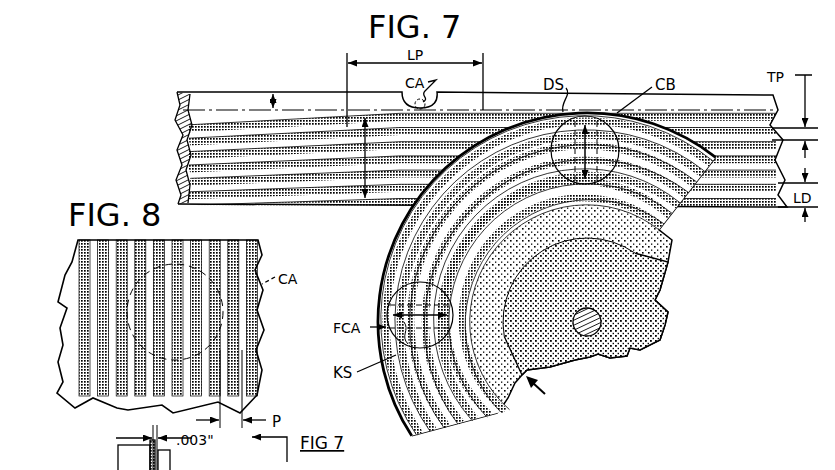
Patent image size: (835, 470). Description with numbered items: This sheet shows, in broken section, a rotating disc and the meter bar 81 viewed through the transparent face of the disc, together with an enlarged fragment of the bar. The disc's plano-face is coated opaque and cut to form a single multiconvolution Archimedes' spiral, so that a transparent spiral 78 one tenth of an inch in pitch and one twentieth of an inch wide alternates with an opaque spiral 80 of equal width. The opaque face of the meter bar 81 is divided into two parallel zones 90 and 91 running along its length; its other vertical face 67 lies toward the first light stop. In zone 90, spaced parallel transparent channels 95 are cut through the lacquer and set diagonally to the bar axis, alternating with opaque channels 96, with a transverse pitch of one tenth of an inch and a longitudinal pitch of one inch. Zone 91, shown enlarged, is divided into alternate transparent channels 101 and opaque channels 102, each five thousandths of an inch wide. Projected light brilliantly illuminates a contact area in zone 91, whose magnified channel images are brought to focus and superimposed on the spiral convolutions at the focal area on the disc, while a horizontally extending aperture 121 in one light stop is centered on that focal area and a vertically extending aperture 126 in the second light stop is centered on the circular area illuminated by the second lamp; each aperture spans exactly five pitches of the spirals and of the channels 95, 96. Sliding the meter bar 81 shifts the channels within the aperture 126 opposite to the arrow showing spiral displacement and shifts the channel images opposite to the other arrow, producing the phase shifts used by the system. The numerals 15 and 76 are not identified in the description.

In FIG. 7, the meter bar 81 is at (178, 100).
In FIG. 7, the opaque channels 96 is at (181, 126).
In FIG. 7, the transparent channels 95 is at (181, 150).
In FIG. 7, the zone 90 is at (374, 200).
In FIG. 7, the zone 91 is at (268, 101).
In FIG. 7, the aperture 126 is at (614, 110).
In FIG. 7, the opaque spiral 80 is at (676, 211).
In FIG. 7, the transparent spiral 78 is at (669, 231).
In FIG. 7, the aperture 121 is at (392, 300).
In FIG. 7, the core 15 is at (661, 330).
In FIG. 7, the core boundary 76 is at (597, 358).
In FIG. 8, the opaque channels 102 is at (78, 249).
In FIG. 8, the transparent channels 101 is at (72, 284).
In FIG. 8, the vertical face 67 is at (126, 447).